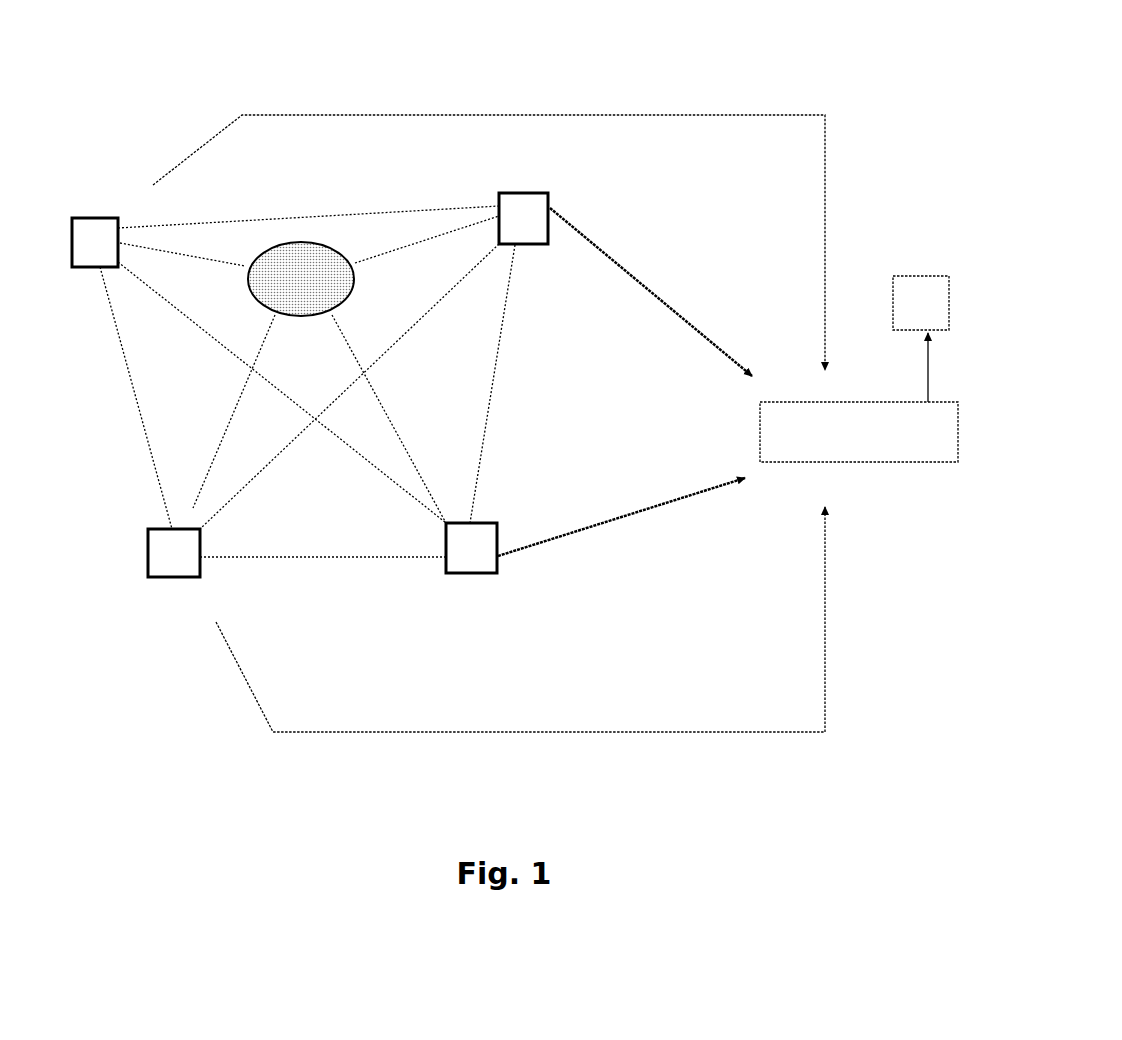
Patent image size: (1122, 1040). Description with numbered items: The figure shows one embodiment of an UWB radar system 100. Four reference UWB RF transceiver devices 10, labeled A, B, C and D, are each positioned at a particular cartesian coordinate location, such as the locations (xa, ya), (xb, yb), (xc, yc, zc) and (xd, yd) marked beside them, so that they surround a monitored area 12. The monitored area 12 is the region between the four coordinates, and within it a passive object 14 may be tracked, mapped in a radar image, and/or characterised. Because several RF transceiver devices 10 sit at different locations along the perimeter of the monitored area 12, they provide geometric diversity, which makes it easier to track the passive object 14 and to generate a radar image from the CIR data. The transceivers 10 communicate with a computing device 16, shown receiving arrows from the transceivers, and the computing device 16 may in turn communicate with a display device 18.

The positioning system 100 is at (878, 73).
The reference UWB RF transceiver device 10 is at (201, 558).
The monitored area 12 is at (390, 310).
The passive object 14 is at (301, 279).
The computing device 16 is at (859, 432).
The display device 18 is at (921, 339).